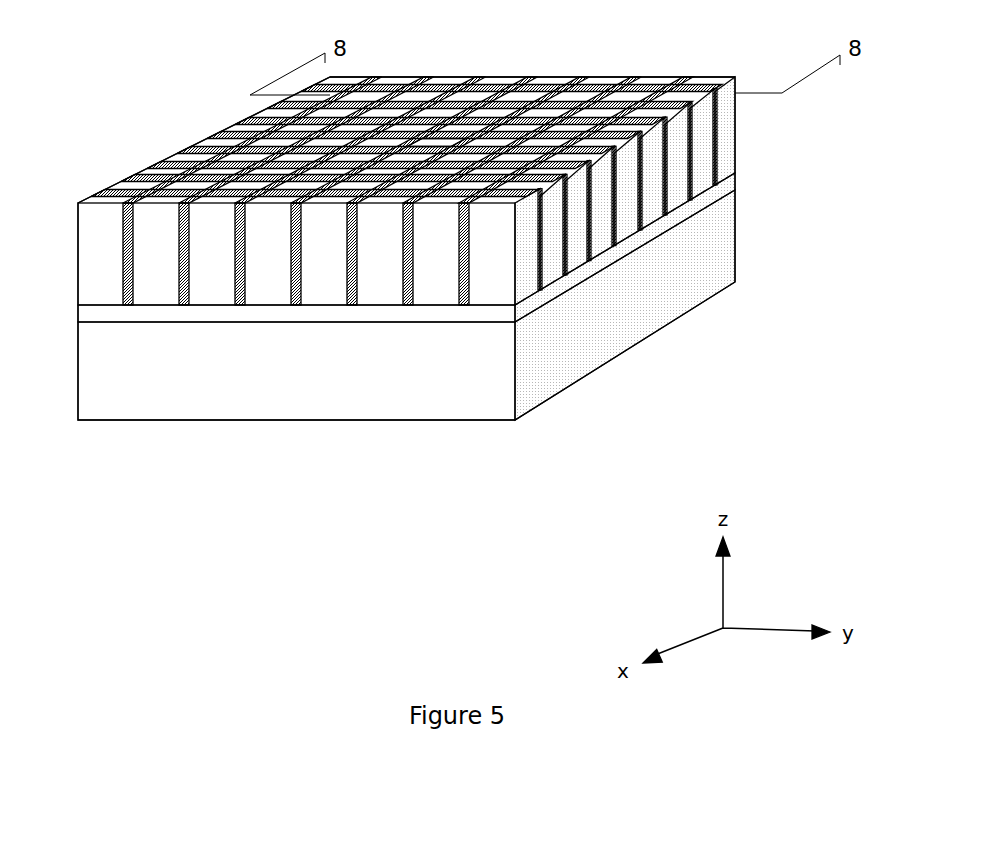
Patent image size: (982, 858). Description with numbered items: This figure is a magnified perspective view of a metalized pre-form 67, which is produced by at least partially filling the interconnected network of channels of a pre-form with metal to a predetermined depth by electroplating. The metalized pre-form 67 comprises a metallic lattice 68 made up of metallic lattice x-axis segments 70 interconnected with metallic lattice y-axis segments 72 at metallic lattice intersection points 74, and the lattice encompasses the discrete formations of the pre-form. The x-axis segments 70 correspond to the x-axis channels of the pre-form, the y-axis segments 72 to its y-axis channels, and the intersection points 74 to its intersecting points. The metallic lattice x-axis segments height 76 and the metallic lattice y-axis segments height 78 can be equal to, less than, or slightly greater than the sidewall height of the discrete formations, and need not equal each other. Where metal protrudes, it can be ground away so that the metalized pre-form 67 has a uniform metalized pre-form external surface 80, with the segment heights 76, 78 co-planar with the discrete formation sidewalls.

The metalized pre-form 67 is at (387, 518).
The metallic lattice 68 is at (266, 155).
The metallic lattice x-axis segments 70 is at (182, 305).
The metallic lattice y-axis segments 72 is at (540, 290).
The metallic lattice intersection points 74 is at (577, 100).
The metallic lattice x-axis segments height 76 is at (125, 305).
The metallic lattice y-axis segments height 78 is at (667, 210).
The metalized pre-form external surface 80 is at (445, 140).